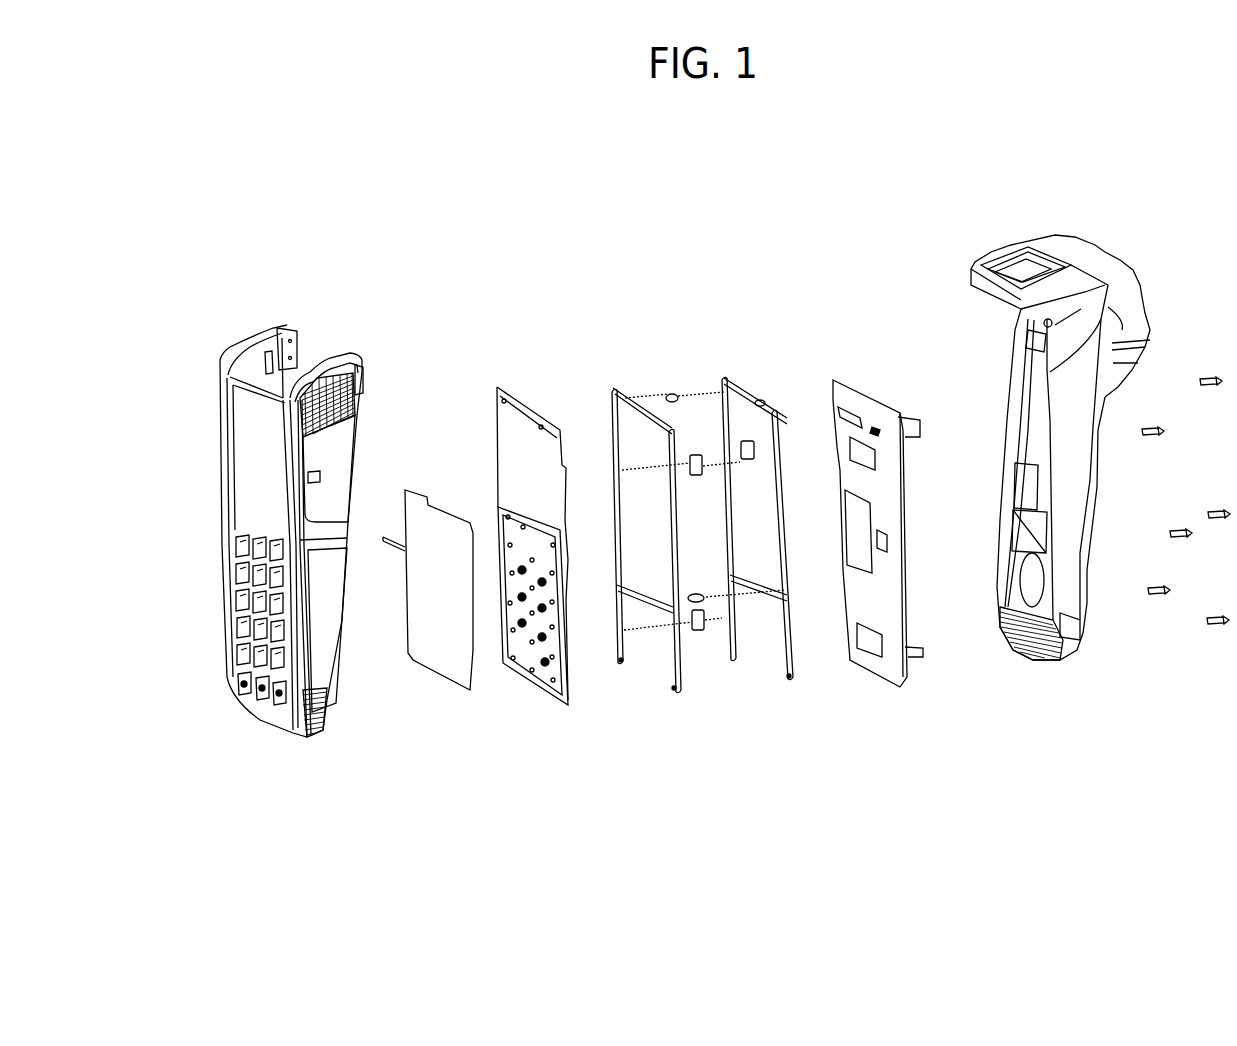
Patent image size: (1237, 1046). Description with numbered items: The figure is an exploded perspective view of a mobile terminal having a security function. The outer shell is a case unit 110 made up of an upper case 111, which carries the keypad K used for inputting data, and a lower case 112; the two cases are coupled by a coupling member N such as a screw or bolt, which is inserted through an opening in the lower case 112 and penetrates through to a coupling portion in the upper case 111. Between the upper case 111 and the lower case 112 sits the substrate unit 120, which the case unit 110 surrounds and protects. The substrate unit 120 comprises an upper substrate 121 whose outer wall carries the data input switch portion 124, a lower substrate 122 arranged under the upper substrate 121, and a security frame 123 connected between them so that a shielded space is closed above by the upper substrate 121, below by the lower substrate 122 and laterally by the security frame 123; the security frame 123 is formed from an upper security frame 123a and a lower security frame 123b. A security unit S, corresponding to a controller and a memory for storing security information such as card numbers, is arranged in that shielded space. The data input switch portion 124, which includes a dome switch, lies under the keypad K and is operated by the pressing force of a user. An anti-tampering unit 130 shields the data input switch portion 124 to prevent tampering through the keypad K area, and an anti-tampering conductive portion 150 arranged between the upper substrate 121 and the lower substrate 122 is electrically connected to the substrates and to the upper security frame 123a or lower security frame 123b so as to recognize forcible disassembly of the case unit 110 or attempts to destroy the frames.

The case unit 110 is at (633, 203).
The upper case 111 is at (283, 322).
The lower case 112 is at (970, 287).
The keypad K is at (238, 600).
The substrate unit 120 is at (638, 843).
The upper substrate 121 is at (565, 705).
The lower substrate 122 is at (882, 688).
The security frame 123 is at (743, 797).
The upper security frame 123a is at (618, 660).
The lower security frame 123b is at (786, 680).
The data input switch portion 124 is at (498, 522).
The anti-tampering unit 130 is at (443, 686).
The anti-tampering conductive portion 150 is at (694, 456).
The security unit S is at (863, 458).
The coupling member N is at (1158, 596).